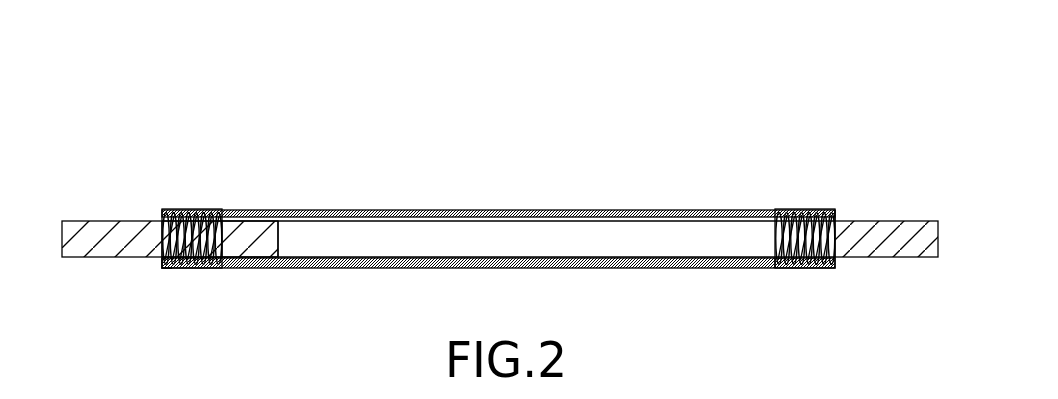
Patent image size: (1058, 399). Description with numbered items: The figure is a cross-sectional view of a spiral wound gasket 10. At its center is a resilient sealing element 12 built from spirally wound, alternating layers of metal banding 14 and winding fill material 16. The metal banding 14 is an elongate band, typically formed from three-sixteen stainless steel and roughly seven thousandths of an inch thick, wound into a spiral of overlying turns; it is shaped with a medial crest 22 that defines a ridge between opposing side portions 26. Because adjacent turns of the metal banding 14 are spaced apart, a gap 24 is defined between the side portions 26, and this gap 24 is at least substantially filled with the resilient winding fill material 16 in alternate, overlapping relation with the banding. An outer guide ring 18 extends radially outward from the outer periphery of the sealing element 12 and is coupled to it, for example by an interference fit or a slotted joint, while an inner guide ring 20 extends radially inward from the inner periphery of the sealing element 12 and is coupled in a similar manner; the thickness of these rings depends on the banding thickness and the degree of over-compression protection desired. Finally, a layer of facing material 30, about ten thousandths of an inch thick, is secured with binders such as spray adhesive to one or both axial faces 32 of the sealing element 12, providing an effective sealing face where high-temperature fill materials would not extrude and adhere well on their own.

The spiral wound gasket 10 is at (500, 192).
The sealing element 12 is at (845, 262).
The metal banding 14 is at (805, 228).
The winding fill material 16 is at (838, 218).
The outer guide ring 18 is at (124, 230).
The inner guide ring 20 is at (276, 235).
The medial crest 22 is at (150, 245).
The gap 24 is at (166, 278).
The side portions 26 is at (199, 198).
The facing material 30 is at (780, 264).
The axial faces 32 is at (818, 280).